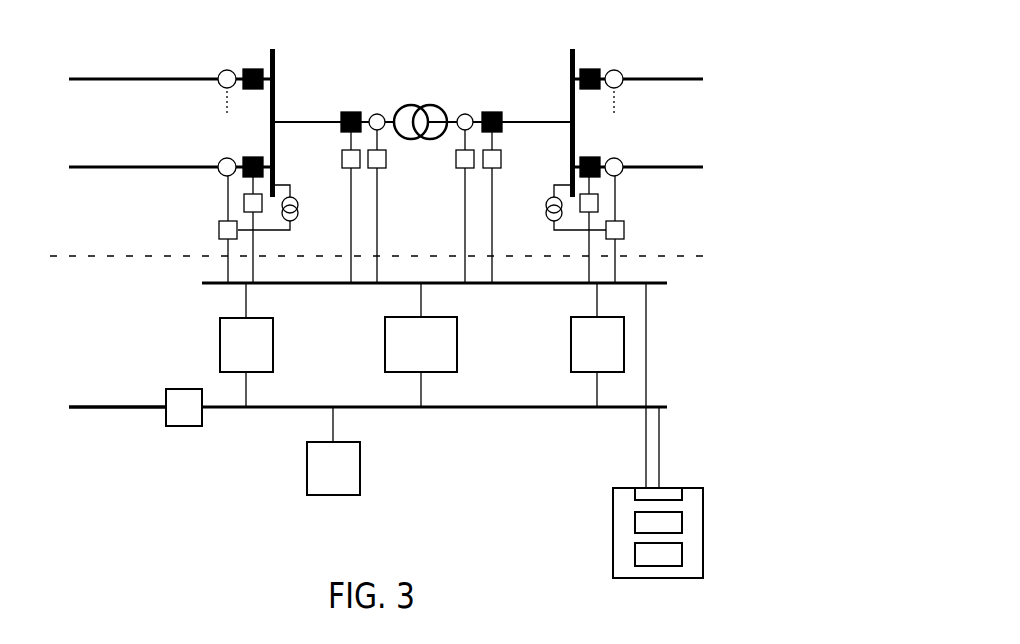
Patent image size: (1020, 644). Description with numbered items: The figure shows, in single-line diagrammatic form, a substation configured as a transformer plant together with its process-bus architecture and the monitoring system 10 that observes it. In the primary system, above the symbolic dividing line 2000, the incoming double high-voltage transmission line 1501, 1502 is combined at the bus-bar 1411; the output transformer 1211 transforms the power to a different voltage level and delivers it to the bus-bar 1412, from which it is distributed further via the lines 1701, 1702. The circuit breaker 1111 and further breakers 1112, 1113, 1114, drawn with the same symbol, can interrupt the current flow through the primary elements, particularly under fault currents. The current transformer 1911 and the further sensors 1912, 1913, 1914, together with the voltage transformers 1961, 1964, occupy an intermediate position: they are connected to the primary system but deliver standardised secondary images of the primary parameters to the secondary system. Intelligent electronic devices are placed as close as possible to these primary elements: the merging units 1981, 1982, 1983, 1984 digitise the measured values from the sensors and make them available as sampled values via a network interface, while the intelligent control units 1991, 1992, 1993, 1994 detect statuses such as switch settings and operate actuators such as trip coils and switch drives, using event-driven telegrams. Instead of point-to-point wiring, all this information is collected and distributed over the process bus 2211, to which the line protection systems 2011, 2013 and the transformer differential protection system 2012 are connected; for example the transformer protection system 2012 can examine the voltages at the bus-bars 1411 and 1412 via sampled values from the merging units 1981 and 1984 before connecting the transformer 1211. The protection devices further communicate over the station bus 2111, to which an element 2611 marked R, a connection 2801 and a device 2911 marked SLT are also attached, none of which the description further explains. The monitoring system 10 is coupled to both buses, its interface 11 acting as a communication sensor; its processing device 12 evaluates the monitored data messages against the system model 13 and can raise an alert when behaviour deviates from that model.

The monitoring system 10 is at (667, 431).
The interface 11 is at (635, 497).
The processing device 12 is at (682, 522).
The system model 13 is at (635, 558).
The circuit breaker 1111 is at (247, 158).
The circuit breaker 1112 is at (344, 113).
The circuit breaker 1113 is at (496, 113).
The circuit breaker 1114 is at (588, 157).
The output transformer 1211 is at (413, 105).
The bus-bar 1411 is at (275, 57).
The bus-bar 1412 is at (568, 57).
The high-voltage transmission line 1501 is at (80, 166).
The high-voltage transmission line 1502 is at (80, 76).
The line 1701 is at (668, 164).
The line 1702 is at (668, 76).
The current transformer 1911 is at (226, 180).
The current sensor 1912 is at (372, 114).
The current sensor 1913 is at (470, 113).
The current sensor 1914 is at (620, 181).
The voltage transformer 1961 is at (325, 205).
The voltage sensor 1964 is at (544, 214).
The merging unit 1981 is at (219, 237).
The merging unit 1982 is at (387, 159).
The merging unit 1983 is at (456, 168).
The merging unit 1984 is at (626, 234).
The intelligent control unit 1991 is at (244, 204).
The intelligent control unit 1992 is at (342, 157).
The intelligent control unit 1993 is at (530, 150).
The intelligent control unit 1994 is at (600, 204).
The dividing line 2000 is at (78, 253).
The line protection system 2011 is at (220, 340).
The transformer differential protection system 2012 is at (458, 343).
The line protection system 2013 is at (627, 343).
The station bus 2111 is at (538, 410).
The process bus 2211 is at (299, 287).
The router R 2611 is at (185, 428).
The wide area network connection 2801 is at (78, 410).
The station level tool SLT 2911 is at (361, 470).